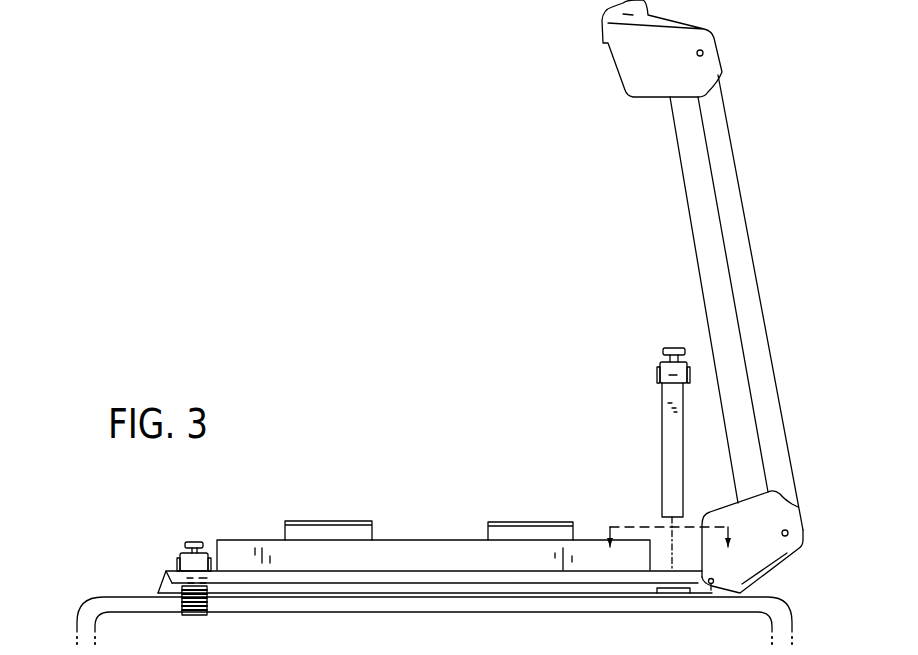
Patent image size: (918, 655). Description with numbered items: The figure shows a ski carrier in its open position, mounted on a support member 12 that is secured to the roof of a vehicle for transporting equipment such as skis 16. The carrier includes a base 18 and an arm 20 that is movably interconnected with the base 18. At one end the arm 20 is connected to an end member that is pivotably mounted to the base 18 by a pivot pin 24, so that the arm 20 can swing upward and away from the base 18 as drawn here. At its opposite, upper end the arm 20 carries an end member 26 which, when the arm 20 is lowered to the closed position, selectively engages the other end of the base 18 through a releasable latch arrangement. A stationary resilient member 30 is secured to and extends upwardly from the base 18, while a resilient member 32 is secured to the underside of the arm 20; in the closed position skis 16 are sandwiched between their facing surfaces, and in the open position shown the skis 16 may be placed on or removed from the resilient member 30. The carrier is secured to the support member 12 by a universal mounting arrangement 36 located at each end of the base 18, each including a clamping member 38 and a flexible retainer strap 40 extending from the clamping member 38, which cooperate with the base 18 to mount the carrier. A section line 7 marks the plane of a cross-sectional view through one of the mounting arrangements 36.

The section line 7- 7 is at (668, 529).
The support member 12 is at (84, 602).
The skis 16 is at (325, 521).
The base 18 is at (160, 567).
The arm 20 is at (765, 292).
The pivot pin 24 is at (709, 586).
The end member 26 is at (616, 68).
The stationary resilient member 30 is at (437, 540).
The resilient member 32 is at (675, 160).
The universal mounting arrangement 36 is at (181, 552).
The clamping member 38 is at (657, 361).
The retainer strap 40 is at (657, 403).